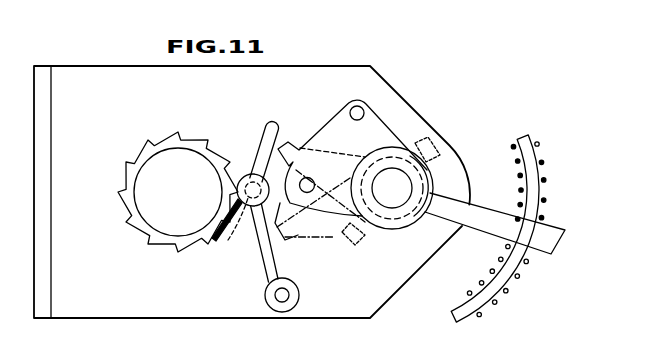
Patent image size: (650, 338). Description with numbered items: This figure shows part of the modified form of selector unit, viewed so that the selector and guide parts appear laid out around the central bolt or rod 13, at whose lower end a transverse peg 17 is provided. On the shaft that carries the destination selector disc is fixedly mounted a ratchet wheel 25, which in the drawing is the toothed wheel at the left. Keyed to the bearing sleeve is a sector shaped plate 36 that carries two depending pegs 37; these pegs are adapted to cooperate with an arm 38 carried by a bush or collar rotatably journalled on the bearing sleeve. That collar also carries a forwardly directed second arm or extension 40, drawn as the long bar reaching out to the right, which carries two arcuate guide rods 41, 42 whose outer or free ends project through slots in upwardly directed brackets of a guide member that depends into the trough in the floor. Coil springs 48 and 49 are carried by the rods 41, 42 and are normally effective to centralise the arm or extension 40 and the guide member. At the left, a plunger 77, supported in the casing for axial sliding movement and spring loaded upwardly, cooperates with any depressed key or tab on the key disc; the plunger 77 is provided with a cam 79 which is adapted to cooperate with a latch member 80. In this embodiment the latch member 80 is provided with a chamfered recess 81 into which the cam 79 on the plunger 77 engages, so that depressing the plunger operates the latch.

The bolt or rod 13 is at (393, 202).
The transverse peg 17 is at (452, 143).
The ratchet wheel 25 is at (138, 226).
The sector shaped plate 36 is at (381, 122).
The depending pegs 37 is at (352, 106).
The arm 38 is at (293, 144).
The arm or extension 40 is at (543, 241).
The arcuate guide rod 41 is at (538, 192).
The arcuate guide rod 42 is at (497, 292).
The coil spring 48 is at (540, 142).
The coil spring 49 is at (528, 264).
The plunger 77 is at (228, 240).
The cam 79 is at (249, 175).
The latch member 80 is at (271, 258).
The chamfered recess 81 is at (265, 196).